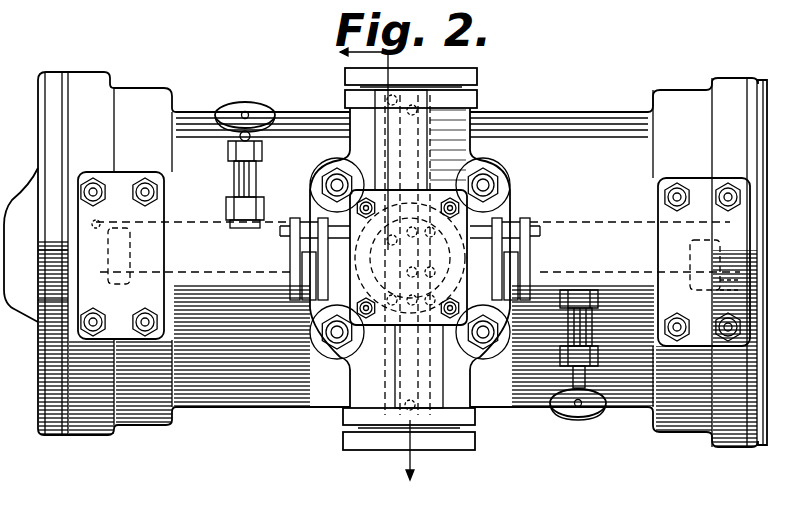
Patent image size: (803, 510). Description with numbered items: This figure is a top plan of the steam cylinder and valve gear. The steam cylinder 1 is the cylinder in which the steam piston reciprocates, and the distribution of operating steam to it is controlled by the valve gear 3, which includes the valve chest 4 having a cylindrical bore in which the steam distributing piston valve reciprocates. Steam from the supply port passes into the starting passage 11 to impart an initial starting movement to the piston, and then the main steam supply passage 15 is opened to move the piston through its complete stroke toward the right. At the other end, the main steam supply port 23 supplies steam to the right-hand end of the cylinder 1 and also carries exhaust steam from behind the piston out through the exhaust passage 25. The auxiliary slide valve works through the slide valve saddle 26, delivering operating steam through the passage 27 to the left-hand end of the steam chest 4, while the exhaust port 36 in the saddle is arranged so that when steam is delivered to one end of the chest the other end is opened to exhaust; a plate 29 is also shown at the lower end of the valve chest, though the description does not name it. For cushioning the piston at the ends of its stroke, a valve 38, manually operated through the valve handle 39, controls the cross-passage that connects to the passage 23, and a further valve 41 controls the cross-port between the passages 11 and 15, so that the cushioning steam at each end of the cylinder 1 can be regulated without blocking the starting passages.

The steam cylinder 1 is at (562, 132).
The valve gear 3 is at (363, 273).
The valve chest 4 is at (365, 385).
The starting passage 11 is at (104, 232).
The main steam supply passage 15 is at (150, 272).
The main steam supply port 23 is at (606, 262).
The exhaust passage 25 is at (720, 275).
The slide valve saddle 26 is at (390, 318).
The passage 27 is at (435, 112).
The bottom closure plate 29 is at (470, 412).
The exhaust port 36 is at (512, 218).
The valve 38 is at (556, 392).
The valve handle 39 is at (570, 415).
The valve 41 is at (254, 104).